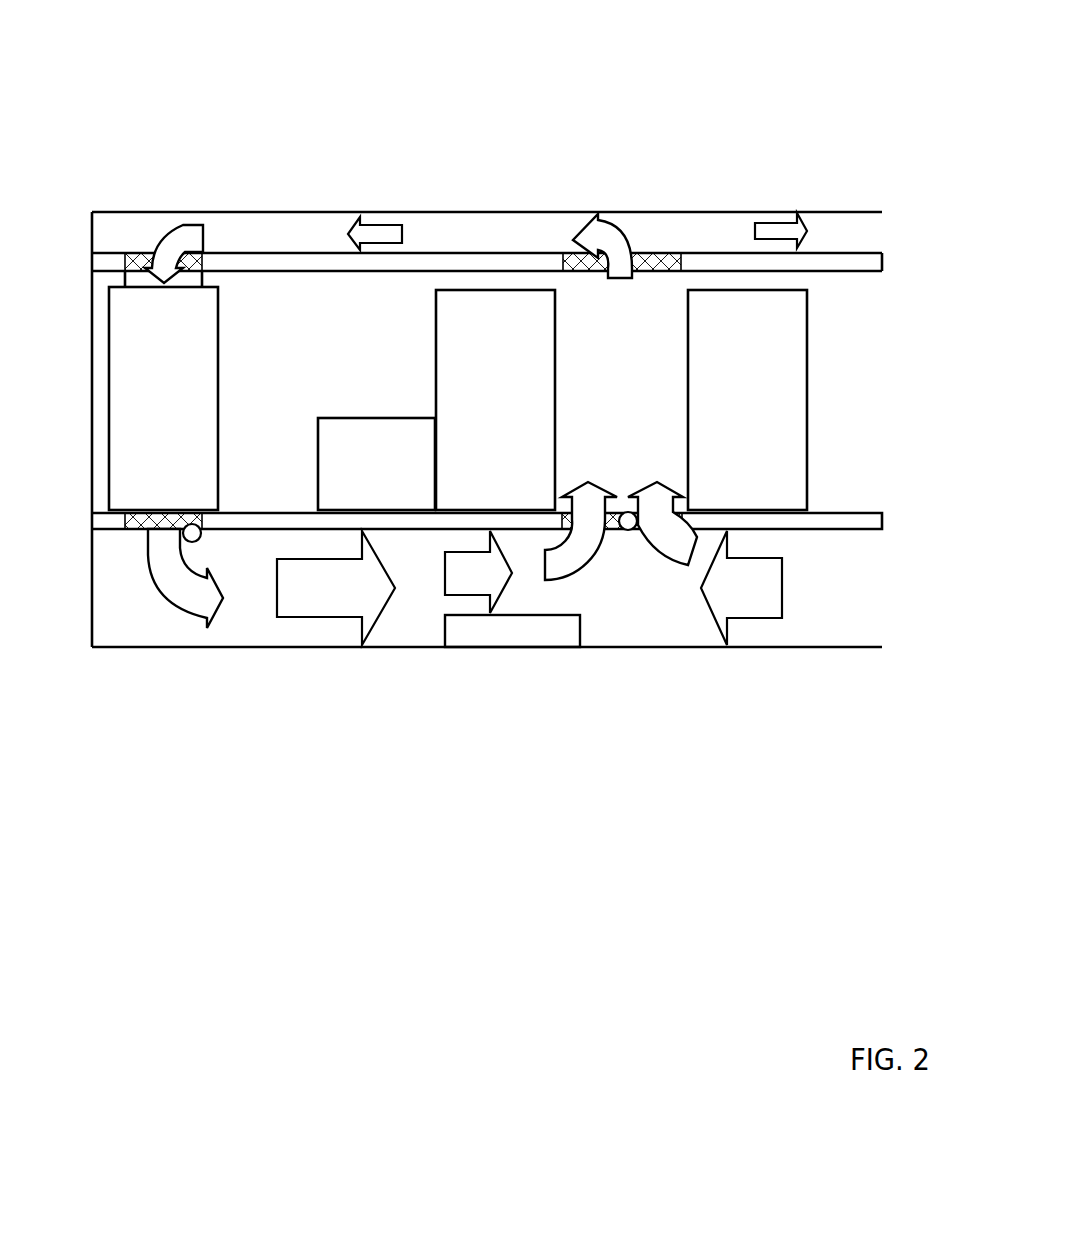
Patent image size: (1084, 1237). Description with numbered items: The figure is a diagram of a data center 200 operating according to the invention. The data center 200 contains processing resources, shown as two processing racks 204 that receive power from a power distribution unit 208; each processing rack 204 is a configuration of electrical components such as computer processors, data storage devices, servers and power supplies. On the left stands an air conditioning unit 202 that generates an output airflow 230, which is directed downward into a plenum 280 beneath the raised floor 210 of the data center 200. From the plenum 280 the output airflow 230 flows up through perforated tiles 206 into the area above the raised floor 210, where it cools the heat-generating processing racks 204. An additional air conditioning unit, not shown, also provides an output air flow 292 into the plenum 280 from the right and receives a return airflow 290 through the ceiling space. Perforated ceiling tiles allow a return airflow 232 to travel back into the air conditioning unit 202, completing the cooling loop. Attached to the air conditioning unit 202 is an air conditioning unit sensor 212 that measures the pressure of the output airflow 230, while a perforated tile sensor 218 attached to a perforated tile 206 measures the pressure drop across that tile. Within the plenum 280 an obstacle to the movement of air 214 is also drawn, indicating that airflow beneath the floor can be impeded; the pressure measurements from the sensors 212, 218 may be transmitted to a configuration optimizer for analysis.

The data center 200 is at (742, 88).
The air conditioning unit 202 is at (148, 439).
The processing racks 204 is at (762, 435).
The perforated tiles 206 is at (577, 508).
The power distribution unit 208 is at (410, 500).
The raised floor 210 is at (885, 512).
The air conditioning unit sensor 212 is at (203, 530).
The obstacles to the movement of air 214 is at (501, 632).
The perforated tile sensor 218 is at (632, 532).
The output airflow 230 is at (187, 592).
The return airflow 232 is at (443, 175).
The plenum 280 is at (258, 629).
The return airflow 290 is at (752, 225).
The output air flow 292 is at (740, 593).